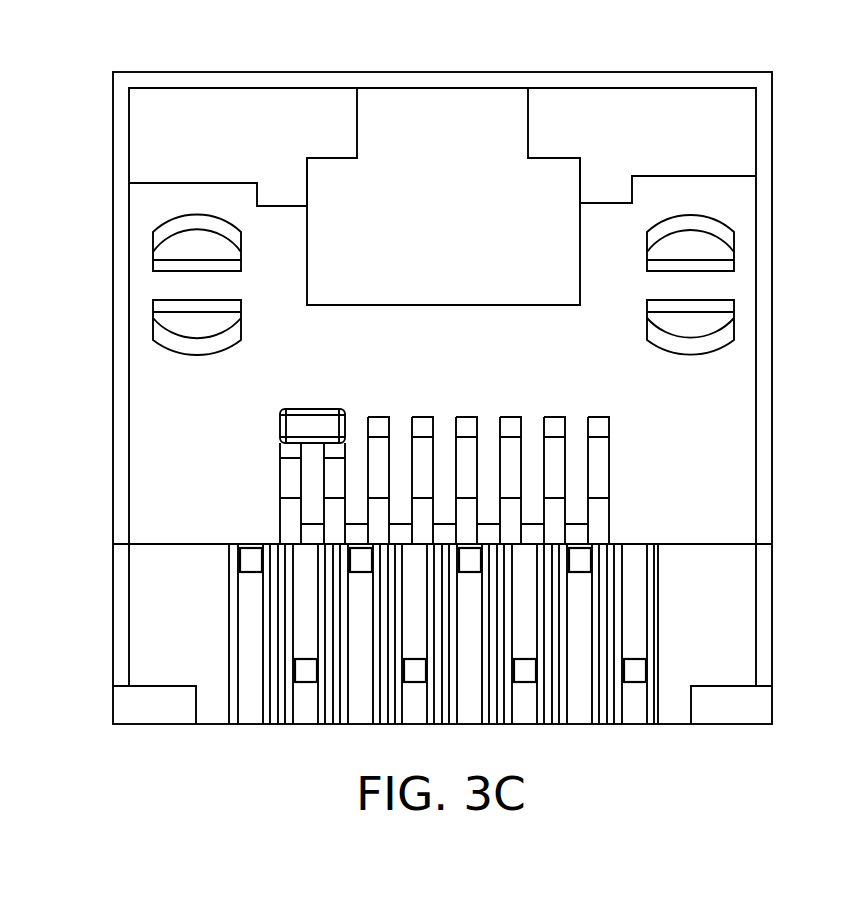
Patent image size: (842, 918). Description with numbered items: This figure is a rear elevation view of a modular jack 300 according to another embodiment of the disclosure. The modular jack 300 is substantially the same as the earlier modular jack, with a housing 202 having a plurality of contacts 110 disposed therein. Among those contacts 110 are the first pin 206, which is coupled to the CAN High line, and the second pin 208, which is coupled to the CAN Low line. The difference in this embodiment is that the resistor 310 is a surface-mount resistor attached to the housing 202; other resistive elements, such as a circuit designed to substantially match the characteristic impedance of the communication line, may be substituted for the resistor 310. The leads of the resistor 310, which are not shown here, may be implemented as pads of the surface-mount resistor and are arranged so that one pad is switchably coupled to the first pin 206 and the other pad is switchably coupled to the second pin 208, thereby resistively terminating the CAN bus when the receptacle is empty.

The modular jack 300 is at (725, 71).
The housing 202 is at (122, 243).
The resistor 310 is at (307, 421).
The Pin 1 206 is at (287, 451).
The Pin 2 208 is at (338, 452).
The contacts 110 is at (590, 424).